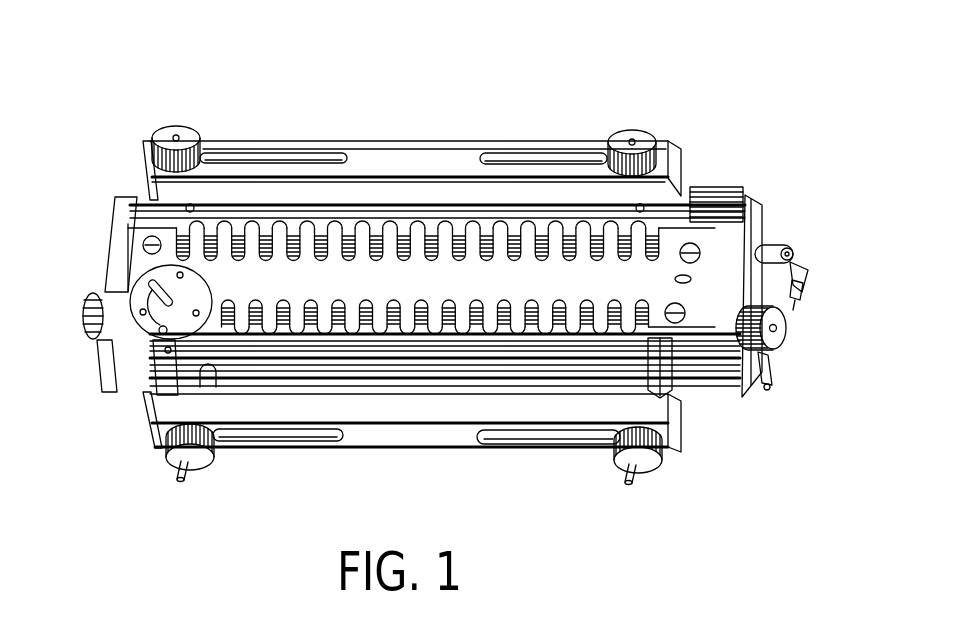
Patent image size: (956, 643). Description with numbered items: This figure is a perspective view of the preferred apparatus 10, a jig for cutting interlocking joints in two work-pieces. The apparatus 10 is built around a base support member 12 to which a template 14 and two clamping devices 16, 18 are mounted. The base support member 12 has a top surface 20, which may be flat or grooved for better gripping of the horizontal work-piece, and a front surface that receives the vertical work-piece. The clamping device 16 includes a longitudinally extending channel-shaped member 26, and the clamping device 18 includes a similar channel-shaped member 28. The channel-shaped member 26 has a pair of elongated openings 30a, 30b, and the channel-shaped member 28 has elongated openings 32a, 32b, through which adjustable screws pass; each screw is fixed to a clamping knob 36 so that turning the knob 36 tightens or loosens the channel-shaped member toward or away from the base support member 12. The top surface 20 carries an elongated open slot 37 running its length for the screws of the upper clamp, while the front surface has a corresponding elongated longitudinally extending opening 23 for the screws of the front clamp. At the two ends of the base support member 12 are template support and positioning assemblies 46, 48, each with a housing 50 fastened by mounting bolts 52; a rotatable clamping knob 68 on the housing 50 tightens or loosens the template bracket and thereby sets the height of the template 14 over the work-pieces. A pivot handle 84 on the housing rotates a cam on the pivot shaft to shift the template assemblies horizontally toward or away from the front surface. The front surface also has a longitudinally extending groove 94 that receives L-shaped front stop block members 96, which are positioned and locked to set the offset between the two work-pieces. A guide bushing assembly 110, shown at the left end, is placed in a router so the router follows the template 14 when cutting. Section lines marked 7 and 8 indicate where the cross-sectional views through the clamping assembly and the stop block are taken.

The apparatus 10 is at (229, 101).
The base support member 12 is at (764, 224).
The template 14 is at (748, 200).
The clamping device 16 is at (433, 160).
The clamping device 18 is at (457, 410).
The top surface 20 is at (722, 210).
The elongated longitudinally extending opening 23 is at (247, 373).
The channel-shaped member 26 is at (400, 155).
The channel-shaped member 28 is at (380, 405).
The elongated opening 30a is at (510, 160).
The elongated opening 30b is at (250, 155).
The elongated opening 32a is at (535, 440).
The elongated opening 32b is at (325, 437).
The clamping knob 36 is at (168, 132).
The elongated open slot 37 is at (743, 195).
The template support and positioning assembly 46 is at (790, 292).
The template support and positioning assembly 48 is at (122, 199).
The housing 50 is at (786, 306).
The mounting bolt 52 is at (780, 365).
The rotatable clamping knob 68 is at (778, 335).
The pivot handle 84 is at (797, 249).
The longitudinally extending groove 94 is at (135, 368).
The front stop block member 96 is at (137, 390).
The guide bushing assembly 110 is at (118, 293).
The section line 7- 7 is at (598, 150).
The section line 8- 8 is at (690, 363).